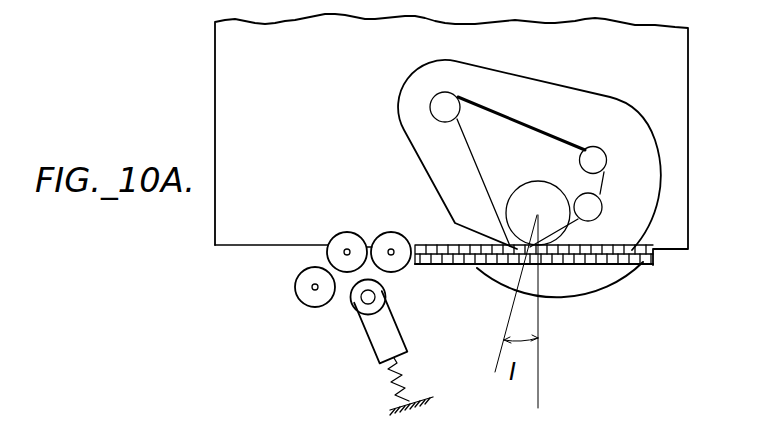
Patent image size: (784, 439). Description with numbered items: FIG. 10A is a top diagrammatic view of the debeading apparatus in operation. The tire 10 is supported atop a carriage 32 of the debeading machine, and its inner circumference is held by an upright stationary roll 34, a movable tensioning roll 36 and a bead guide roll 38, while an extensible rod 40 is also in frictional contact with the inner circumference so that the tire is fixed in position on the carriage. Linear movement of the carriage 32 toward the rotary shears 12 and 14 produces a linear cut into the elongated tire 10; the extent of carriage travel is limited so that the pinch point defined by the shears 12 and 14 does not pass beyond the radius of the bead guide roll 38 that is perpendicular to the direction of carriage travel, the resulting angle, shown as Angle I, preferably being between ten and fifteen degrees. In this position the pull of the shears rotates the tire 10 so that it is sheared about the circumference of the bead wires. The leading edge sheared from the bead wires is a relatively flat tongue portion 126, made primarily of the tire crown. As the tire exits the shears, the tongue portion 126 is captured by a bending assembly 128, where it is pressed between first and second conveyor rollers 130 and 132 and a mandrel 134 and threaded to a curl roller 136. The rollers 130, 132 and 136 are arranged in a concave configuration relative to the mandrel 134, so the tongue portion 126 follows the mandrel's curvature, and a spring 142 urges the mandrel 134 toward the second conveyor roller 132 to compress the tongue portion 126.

The tire 10 is at (418, 137).
The rotary shear 12 is at (650, 250).
The rotary shear 14 is at (638, 265).
The carriage 32 is at (677, 75).
The stationary roll 34 is at (593, 160).
The tensioning roll 36 is at (447, 102).
The bead guide roll 38 is at (522, 195).
The extensible rod 40 is at (588, 207).
The tongue portion 126 is at (507, 282).
The bending assembly 128 is at (350, 212).
The first conveyor roller 130 is at (400, 262).
The second conveyor roller 132 is at (333, 242).
The mandrel 134 is at (387, 292).
The curl roller 136 is at (312, 305).
The spring 142 is at (400, 388).